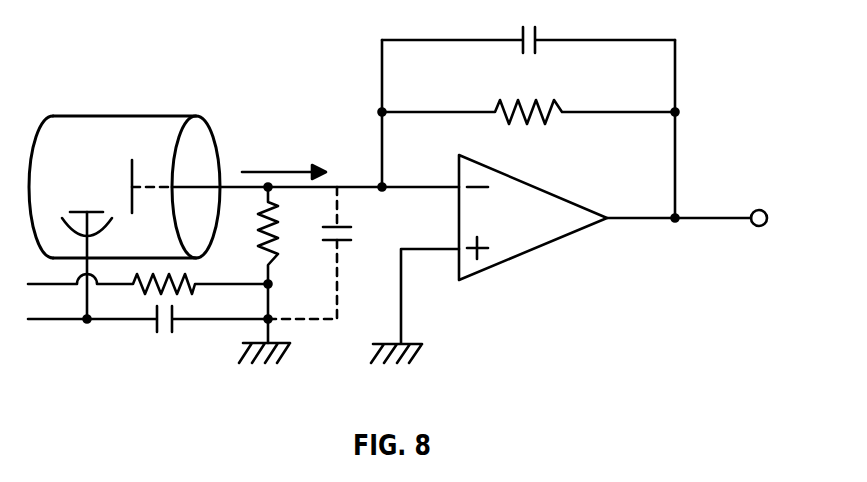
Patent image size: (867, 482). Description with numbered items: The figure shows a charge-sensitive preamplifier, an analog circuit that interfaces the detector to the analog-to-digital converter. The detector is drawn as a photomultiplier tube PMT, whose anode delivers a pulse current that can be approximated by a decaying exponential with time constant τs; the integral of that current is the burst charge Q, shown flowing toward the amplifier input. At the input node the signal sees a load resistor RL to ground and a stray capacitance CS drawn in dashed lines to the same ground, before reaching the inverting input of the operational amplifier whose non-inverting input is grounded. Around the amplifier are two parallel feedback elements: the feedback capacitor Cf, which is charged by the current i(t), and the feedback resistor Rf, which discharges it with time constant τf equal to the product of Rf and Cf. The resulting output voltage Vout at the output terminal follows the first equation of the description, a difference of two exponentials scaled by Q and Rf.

The photomultiplier tube detector PMT is at (124, 199).
The burst charge Q is at (284, 160).
The load resistor RL is at (272, 275).
The stray capacitance CS is at (323, 253).
The feedback capacitor Cf is at (528, 32).
The feedback resistor Rf is at (528, 105).
The output voltage Vout is at (702, 190).